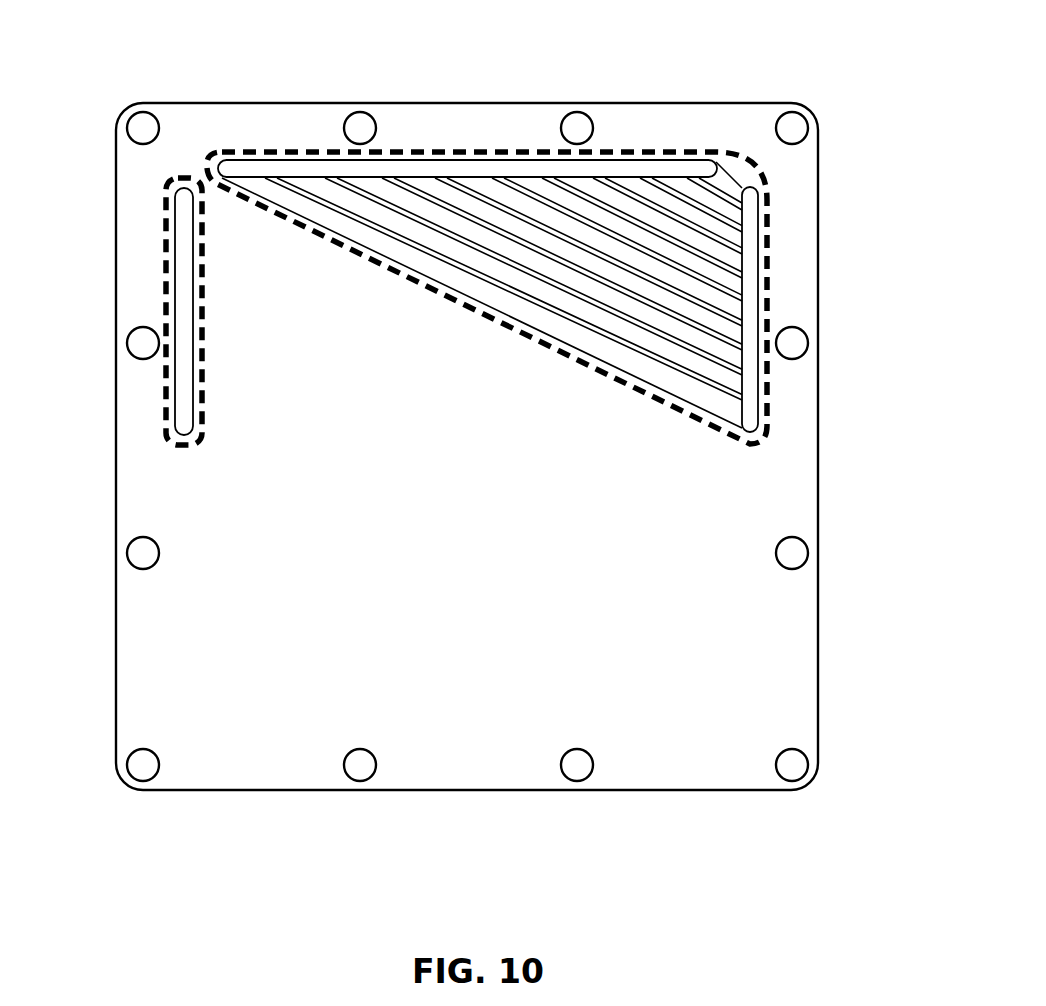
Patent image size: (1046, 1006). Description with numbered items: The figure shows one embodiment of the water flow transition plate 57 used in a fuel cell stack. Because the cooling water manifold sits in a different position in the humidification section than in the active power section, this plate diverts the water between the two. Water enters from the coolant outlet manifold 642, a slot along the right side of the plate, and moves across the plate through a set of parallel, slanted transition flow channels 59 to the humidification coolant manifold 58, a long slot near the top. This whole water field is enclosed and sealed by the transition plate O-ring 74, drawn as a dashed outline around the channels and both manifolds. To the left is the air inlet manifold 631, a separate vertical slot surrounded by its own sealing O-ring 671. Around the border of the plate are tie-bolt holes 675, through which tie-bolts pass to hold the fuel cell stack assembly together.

The water flow transition plate 57 is at (447, 102).
The humidification coolant manifold 58 is at (502, 172).
The transition flow channels 59 is at (718, 312).
The transition plate O-ring 74 is at (770, 400).
The air inlet manifold 631 is at (185, 262).
The coolant outlet manifold 642 is at (752, 223).
The sealing O-ring 671 is at (162, 307).
The tie-bolt holes 675 is at (157, 112).